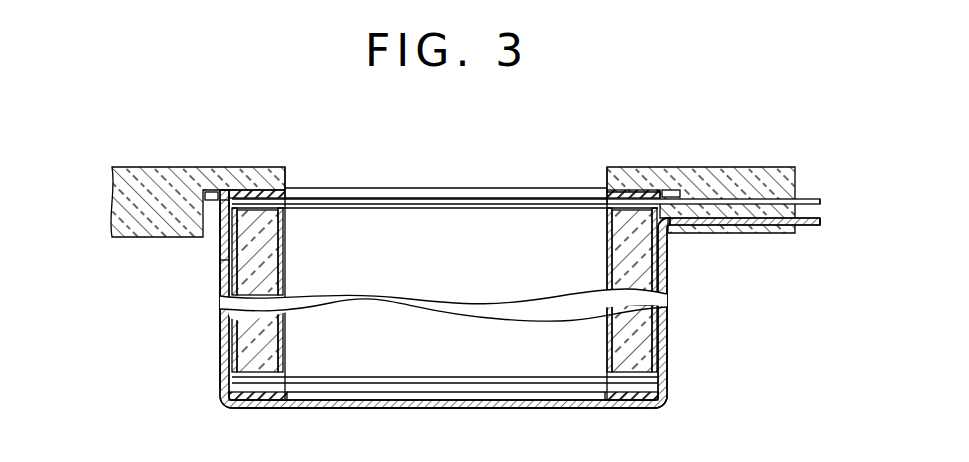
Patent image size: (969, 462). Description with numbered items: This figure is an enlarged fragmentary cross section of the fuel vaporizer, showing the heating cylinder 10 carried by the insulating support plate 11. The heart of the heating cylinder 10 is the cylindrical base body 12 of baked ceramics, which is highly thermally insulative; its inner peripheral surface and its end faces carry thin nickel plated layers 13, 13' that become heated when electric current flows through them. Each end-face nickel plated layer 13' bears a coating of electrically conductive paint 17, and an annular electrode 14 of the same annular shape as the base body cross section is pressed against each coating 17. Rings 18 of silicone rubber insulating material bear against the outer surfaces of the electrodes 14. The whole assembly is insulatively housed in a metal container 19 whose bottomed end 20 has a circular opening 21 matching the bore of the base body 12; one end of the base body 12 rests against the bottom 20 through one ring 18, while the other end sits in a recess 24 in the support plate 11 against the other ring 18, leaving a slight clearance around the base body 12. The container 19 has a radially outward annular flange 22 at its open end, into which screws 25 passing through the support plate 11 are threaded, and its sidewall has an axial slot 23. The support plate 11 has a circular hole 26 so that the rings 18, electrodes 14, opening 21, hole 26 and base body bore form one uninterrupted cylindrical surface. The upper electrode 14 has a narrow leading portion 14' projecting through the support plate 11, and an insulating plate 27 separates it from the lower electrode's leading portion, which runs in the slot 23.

The heating cylinder 10 is at (236, 412).
The support plate 11 is at (156, 186).
The cylindrical base body 12 is at (248, 280).
The nickel plated layer 13 is at (445, 290).
The nickel plated layer 13' is at (413, 299).
The annular electrode 14 is at (445, 280).
The narrow leading portion 14' is at (722, 167).
The coating of electrically conductive paint 17 is at (288, 208).
The ring 18 is at (275, 192).
The metal container 19 is at (221, 354).
The bottomed end 20 is at (633, 407).
The circular opening 21 is at (606, 402).
The annular flange 22 is at (233, 190).
The slot 23 is at (668, 348).
The recess 24 is at (670, 190).
The screw 25 is at (212, 188).
The circular hole 26 is at (607, 180).
The insulating plate 27 is at (822, 212).